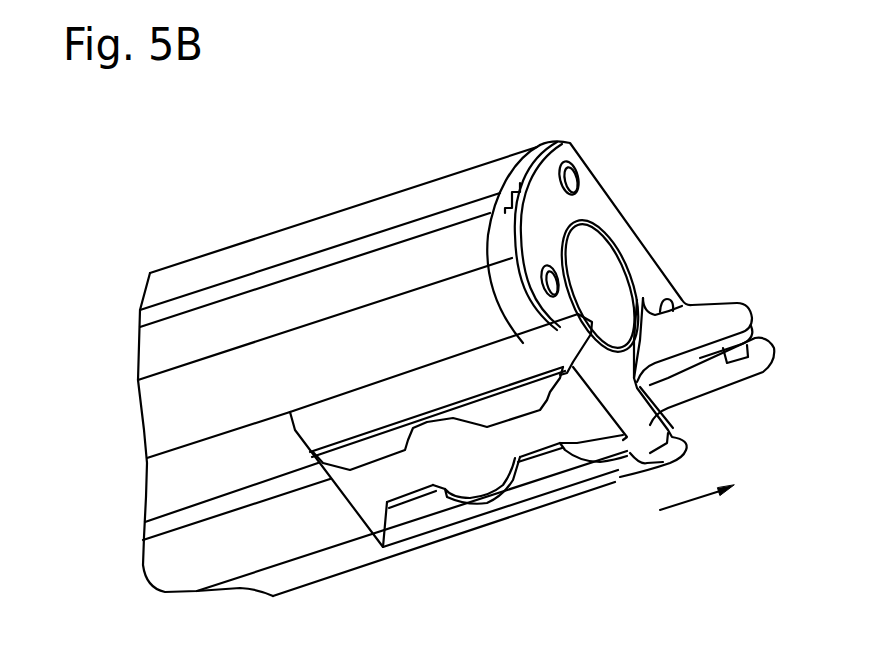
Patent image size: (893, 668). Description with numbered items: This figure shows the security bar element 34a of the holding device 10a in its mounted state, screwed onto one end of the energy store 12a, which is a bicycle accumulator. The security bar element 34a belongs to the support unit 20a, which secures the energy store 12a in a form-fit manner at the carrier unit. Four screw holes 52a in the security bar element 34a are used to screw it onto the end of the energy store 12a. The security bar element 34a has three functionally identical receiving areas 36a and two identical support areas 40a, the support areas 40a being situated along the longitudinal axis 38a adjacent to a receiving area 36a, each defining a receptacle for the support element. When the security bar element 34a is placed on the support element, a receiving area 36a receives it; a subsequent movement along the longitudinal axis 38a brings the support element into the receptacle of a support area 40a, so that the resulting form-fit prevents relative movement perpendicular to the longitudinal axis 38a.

The energy store 12a is at (300, 247).
The holding device 10a is at (535, 533).
The security bar element 34a is at (643, 266).
The screw holes 52a is at (573, 180).
The support unit 20a is at (630, 517).
The support areas 40a is at (418, 510).
The receiving areas 36a is at (490, 507).
The longitudinal axis 38a is at (690, 503).